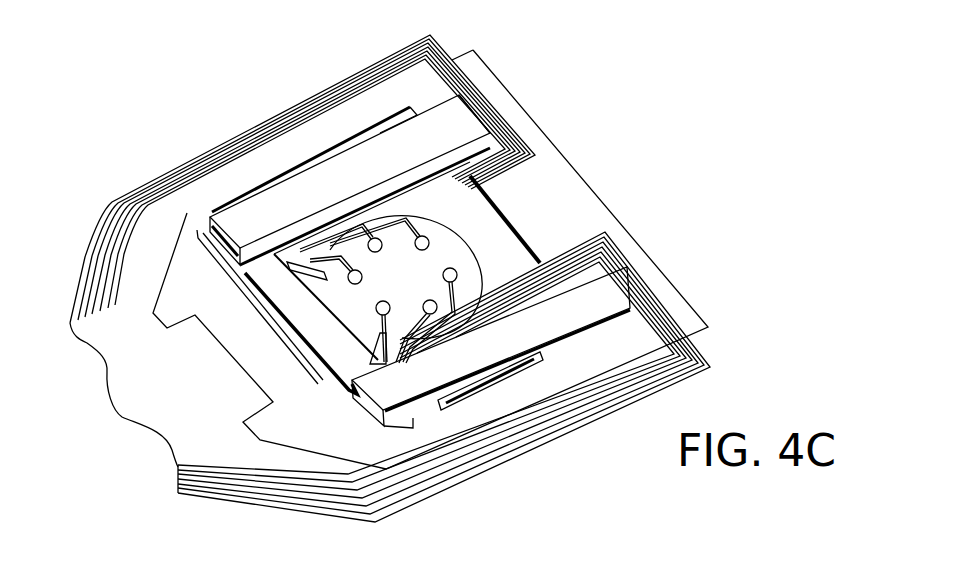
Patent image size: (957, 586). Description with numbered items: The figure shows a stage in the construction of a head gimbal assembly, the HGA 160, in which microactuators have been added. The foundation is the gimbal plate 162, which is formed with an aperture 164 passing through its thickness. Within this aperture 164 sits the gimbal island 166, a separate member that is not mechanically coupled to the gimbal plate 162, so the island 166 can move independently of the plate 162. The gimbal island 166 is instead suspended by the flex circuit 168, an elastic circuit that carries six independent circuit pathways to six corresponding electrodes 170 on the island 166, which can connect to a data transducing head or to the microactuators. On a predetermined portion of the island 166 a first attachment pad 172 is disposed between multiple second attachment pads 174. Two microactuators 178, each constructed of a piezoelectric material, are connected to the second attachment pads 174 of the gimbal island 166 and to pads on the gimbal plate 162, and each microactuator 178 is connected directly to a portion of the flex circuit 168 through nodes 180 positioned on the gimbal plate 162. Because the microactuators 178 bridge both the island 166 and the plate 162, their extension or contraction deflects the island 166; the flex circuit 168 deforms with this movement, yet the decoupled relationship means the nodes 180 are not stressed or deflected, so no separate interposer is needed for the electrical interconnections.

The HGA 160 is at (664, 121).
The gimbal plate 162 is at (668, 278).
The aperture 164 is at (470, 237).
The gimbal island 166 is at (213, 293).
The flex circuit 168 is at (382, 53).
The electrodes 170 is at (502, 254).
The first attachment pad 172 is at (303, 327).
The second attachment pads 174 is at (187, 213).
The microactuators 178 is at (457, 103).
The nodes 180 is at (480, 113).